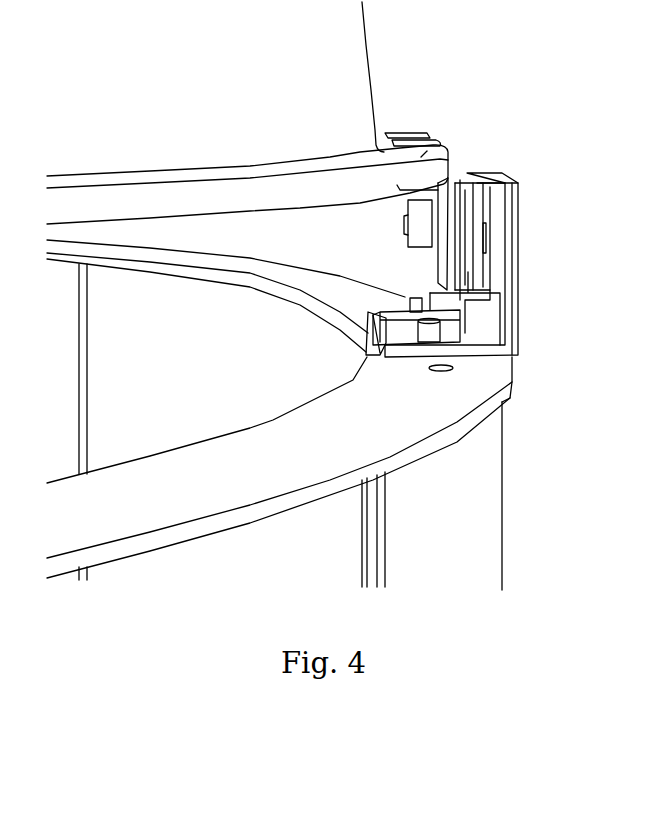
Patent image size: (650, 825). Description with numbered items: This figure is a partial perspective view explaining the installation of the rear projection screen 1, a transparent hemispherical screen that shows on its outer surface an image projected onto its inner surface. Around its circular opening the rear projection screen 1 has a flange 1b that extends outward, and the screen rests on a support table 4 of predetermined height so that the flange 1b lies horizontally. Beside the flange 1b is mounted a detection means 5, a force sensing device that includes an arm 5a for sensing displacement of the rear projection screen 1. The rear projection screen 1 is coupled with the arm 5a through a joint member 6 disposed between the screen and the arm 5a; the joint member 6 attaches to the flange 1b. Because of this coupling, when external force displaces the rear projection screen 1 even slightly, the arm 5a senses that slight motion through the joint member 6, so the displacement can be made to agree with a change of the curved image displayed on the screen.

The rear projection screen 1 is at (372, 57).
The flange 1b is at (443, 143).
The support table 4 is at (503, 377).
The detection means 5 is at (468, 173).
The arm 5a is at (403, 223).
The joint member 6 is at (427, 256).